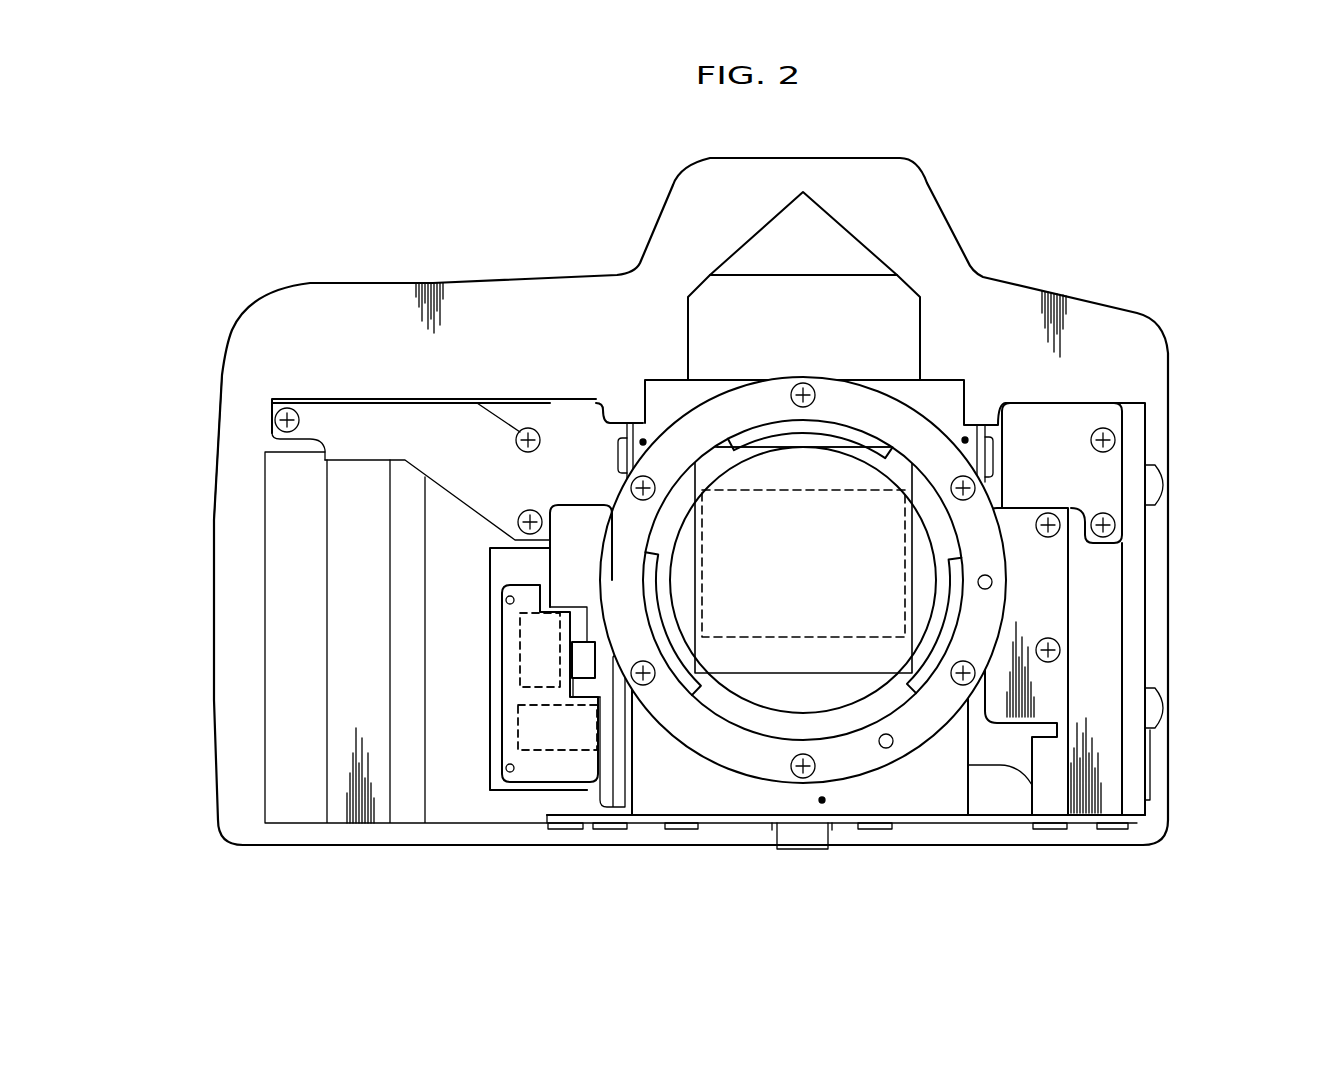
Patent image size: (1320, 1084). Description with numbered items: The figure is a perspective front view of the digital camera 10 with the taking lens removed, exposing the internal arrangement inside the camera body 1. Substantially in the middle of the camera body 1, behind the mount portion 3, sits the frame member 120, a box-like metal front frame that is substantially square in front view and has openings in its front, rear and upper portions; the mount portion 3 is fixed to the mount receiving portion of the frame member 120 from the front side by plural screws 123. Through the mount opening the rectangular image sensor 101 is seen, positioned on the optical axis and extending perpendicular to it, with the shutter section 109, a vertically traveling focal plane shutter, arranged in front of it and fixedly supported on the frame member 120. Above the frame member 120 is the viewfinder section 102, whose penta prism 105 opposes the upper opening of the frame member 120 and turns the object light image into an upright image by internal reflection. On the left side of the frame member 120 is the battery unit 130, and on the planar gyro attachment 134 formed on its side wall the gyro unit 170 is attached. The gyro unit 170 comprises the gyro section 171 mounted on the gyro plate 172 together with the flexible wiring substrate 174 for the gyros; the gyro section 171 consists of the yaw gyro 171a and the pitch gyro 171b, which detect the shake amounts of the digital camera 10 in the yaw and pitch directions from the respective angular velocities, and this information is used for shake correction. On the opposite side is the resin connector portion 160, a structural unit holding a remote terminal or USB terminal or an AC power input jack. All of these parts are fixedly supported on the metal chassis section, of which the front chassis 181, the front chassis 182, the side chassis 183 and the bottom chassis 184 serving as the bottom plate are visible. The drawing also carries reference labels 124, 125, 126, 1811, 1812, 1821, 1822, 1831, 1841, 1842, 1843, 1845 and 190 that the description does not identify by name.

The camera body 1 is at (900, 190).
The digital camera 10 is at (1092, 250).
The penta prism 105 is at (775, 247).
The viewfinder section 102 is at (878, 325).
The image sensor 101 is at (870, 488).
The shutter section 109 is at (808, 599).
The frame member 120 is at (727, 793).
The screws 123 is at (975, 683).
The positioning post 124 is at (643, 440).
The positioning post 125 is at (965, 440).
The tripod socket 126 is at (822, 803).
The mount portion 3 is at (850, 765).
The battery unit 130 is at (353, 690).
The gyro attachment 134 is at (505, 575).
The connector portion 160 is at (1090, 617).
The gyro unit 170 is at (502, 793).
The gyro section 171 is at (300, 865).
The yaw gyro 171a is at (518, 732).
The pitch gyro 171b is at (518, 647).
The gyro plate 172 is at (538, 770).
The flexible wiring substrate 174 is at (583, 655).
The front chassis 181 is at (1052, 430).
The screws 1811 is at (1115, 522).
The engagement piece 1812 is at (993, 455).
The front chassis 182 is at (412, 425).
The screws 1821 is at (287, 408).
The engagement piece 1822 is at (617, 452).
The side chassis 183 is at (1148, 573).
The engagement projections 1831 is at (1160, 482).
The bottom chassis 184 is at (947, 826).
The leg 1841 is at (672, 832).
The leg 1842 is at (1112, 832).
The leg 1843 is at (565, 832).
The leg 1845 is at (607, 832).
The grip 190 is at (213, 520).